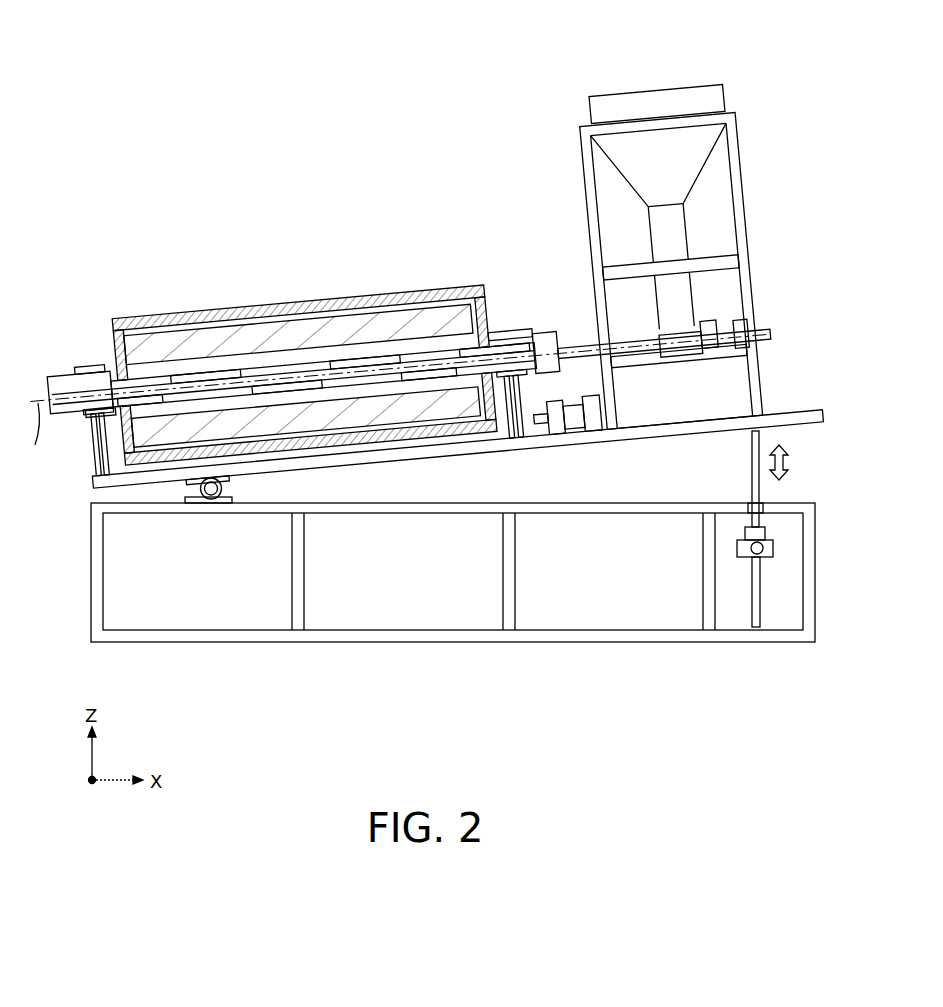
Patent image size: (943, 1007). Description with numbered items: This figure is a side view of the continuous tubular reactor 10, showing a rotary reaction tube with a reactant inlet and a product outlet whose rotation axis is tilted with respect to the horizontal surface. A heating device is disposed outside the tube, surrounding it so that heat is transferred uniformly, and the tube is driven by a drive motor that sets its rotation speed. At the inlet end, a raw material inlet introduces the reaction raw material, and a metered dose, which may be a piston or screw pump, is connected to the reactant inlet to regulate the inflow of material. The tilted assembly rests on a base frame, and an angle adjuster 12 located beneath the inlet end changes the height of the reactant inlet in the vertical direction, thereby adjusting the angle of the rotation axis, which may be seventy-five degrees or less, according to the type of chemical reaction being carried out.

The continuous tubular reactor 10 is at (185, 54).
The angle adjuster 12 is at (728, 547).